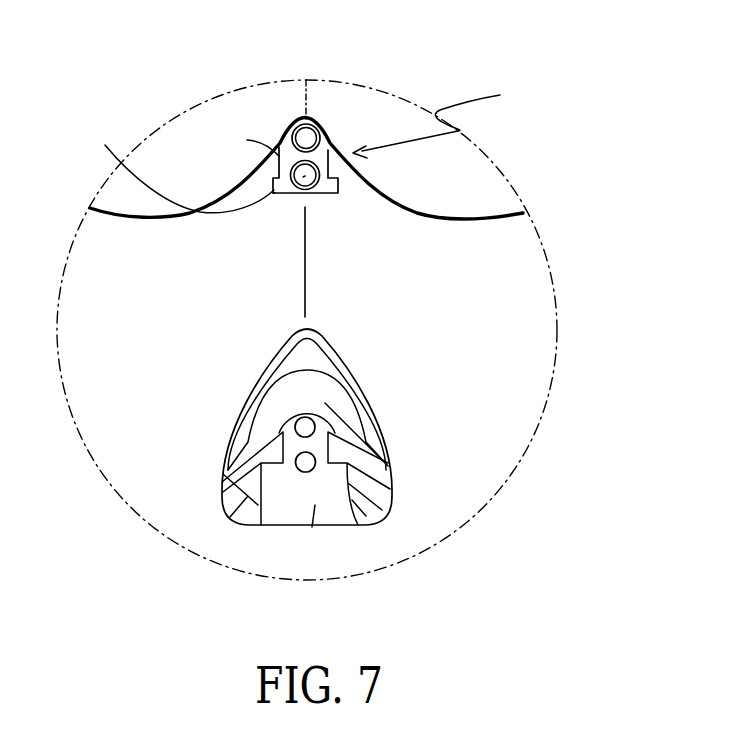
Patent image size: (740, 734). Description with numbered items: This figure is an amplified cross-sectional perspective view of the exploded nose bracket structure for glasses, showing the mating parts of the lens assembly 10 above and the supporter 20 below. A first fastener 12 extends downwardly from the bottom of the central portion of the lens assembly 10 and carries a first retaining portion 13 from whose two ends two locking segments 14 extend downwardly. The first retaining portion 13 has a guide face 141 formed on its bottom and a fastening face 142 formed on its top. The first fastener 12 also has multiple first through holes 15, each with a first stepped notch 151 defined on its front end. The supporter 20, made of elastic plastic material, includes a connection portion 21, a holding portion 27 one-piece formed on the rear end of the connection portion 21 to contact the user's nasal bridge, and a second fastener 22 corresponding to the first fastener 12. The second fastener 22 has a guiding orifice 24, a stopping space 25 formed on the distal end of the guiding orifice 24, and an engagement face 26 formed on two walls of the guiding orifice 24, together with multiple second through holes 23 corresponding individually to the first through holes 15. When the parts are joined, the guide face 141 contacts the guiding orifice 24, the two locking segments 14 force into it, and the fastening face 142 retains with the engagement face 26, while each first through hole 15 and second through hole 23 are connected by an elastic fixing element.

The lens assembly 10 is at (113, 192).
The first fastener 12 is at (440, 120).
The first retaining portion 13 is at (274, 160).
The locking segments 14 is at (352, 234).
The guide face 141 is at (275, 195).
The fastening face 142 is at (247, 140).
The first through holes 15 is at (310, 136).
The first stepped notch 151 is at (304, 178).
The supporter 20 is at (470, 347).
The connection portion 21 is at (227, 520).
The second fastener 22 is at (358, 407).
The second through holes 23 is at (296, 427).
The guiding orifice 24 is at (318, 418).
The stopping space 25 is at (312, 527).
The engagement face 26 is at (356, 512).
The holding portion 27 is at (272, 372).